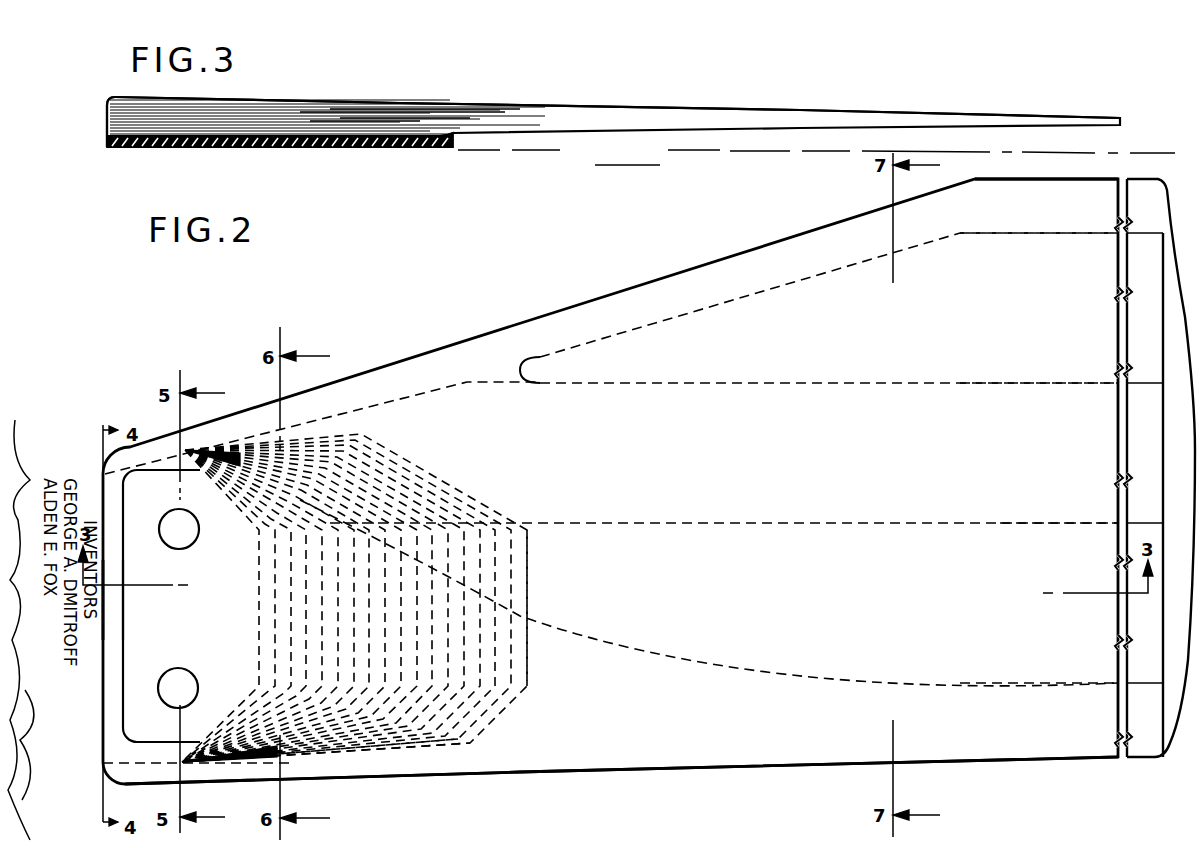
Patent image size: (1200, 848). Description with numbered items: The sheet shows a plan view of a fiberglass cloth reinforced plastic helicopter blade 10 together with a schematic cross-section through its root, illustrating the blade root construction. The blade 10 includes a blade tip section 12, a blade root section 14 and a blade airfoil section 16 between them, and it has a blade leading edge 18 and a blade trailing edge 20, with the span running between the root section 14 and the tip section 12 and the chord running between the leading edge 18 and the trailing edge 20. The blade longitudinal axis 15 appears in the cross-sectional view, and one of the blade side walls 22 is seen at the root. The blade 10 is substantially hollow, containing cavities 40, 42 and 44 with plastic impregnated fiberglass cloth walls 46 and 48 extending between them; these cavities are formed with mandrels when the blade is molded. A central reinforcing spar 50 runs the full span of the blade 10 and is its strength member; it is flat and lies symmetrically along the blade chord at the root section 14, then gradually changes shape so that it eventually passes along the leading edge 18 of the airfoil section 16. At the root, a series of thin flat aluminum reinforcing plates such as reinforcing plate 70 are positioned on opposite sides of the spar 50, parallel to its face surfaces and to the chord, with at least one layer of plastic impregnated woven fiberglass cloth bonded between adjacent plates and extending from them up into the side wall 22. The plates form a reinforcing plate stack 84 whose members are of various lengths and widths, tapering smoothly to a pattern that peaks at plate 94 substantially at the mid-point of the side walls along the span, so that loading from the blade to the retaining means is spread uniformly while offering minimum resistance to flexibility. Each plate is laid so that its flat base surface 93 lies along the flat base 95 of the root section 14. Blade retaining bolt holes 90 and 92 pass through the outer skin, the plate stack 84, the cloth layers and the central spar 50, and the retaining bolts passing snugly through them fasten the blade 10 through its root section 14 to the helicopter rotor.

In FIG. 2, the helicopter blade 10 is at (455, 338).
In FIG. 2, the blade tip section 12 is at (1186, 490).
In FIG. 3, the blade root section 14 is at (350, 100).
In FIG. 2, the blade root section 14 is at (165, 440).
In FIG. 3, the blade longitudinal axis 15 is at (750, 150).
In FIG. 3, the blade airfoil section 16 is at (842, 106).
In FIG. 2, the blade airfoil section 16 is at (1074, 488).
In FIG. 2, the blade leading edge 18 is at (1007, 757).
In FIG. 2, the blade trailing edge 20 is at (1018, 185).
In FIG. 3, the blade side wall 22 is at (643, 110).
In FIG. 2, the cavity 40 is at (1050, 296).
In FIG. 2, the cavity 42 is at (1016, 441).
In FIG. 2, the cavity 44 is at (982, 611).
In FIG. 2, the plastic impregnated fiberglass cloth wall 46 is at (893, 382).
In FIG. 2, the plastic impregnated fiberglass cloth wall 48 is at (903, 525).
In FIG. 3, the central reinforcing spar 50 is at (353, 140).
In FIG. 2, the central reinforcing spar 50 is at (640, 652).
In FIG. 2, the reinforcing plate 70 is at (258, 573).
In FIG. 3, the reinforcing plate stack 84 is at (430, 107).
In FIG. 2, the reinforcing plate stack 84 is at (325, 715).
In FIG. 2, the blade retaining bolt hole 90 is at (182, 538).
In FIG. 2, the blade retaining bolt hole 92 is at (190, 680).
In FIG. 2, the flat base surface 93 is at (100, 610).
In FIG. 2, the plate 94 is at (528, 585).
In FIG. 3, the flat base of blade root section 95 is at (107, 118).
In FIG. 2, the flat base of blade root section 95 is at (98, 636).